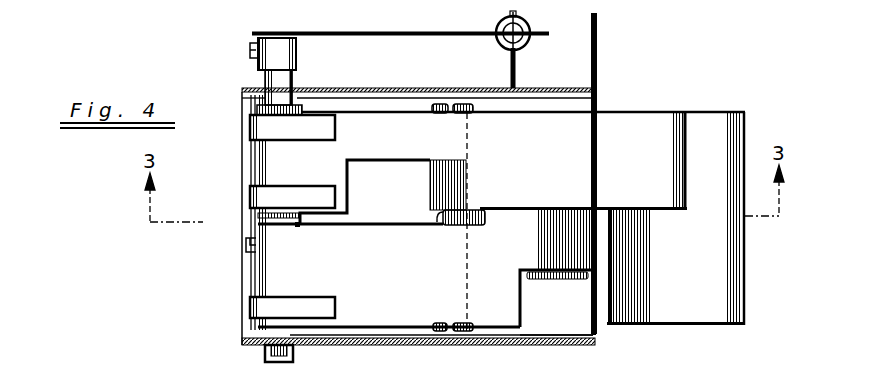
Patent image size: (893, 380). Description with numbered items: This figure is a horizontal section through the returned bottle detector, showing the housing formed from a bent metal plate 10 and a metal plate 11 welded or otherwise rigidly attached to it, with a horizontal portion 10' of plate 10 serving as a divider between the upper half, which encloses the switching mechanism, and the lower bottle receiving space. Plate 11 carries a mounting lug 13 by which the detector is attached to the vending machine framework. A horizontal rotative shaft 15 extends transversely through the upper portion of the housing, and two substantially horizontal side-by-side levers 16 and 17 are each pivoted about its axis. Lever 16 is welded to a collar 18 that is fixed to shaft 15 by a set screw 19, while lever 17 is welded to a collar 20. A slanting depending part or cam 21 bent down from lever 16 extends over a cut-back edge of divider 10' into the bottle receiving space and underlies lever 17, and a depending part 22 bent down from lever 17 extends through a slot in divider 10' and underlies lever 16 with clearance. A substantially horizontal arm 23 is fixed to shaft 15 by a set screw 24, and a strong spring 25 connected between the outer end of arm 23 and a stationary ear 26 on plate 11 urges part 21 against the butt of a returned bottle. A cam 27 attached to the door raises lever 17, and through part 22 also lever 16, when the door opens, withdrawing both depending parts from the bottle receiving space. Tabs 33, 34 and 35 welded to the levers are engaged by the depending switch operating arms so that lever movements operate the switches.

The metal plate 10 is at (493, 236).
The horizontal portion of plate 10 10' is at (580, 283).
The metal plate 11 is at (383, 79).
The mounting lug 13 is at (598, 58).
The rotative shaft 15 is at (292, 351).
The lever 16 is at (376, 228).
The lever 17 is at (380, 160).
The collar 18 is at (258, 224).
The set screw 19 is at (246, 245).
The collar 20 is at (258, 111).
The slanting depending part or cam 21 is at (562, 272).
The depending part 22 is at (441, 227).
The horizontal arm 23 is at (375, 36).
The set screw 24 is at (250, 52).
The spring 25 is at (500, 44).
The stationary ear 26 is at (518, 65).
The cam 27 is at (707, 314).
The tab 33 is at (300, 298).
The tab 34 is at (300, 188).
The tab 35 is at (335, 127).